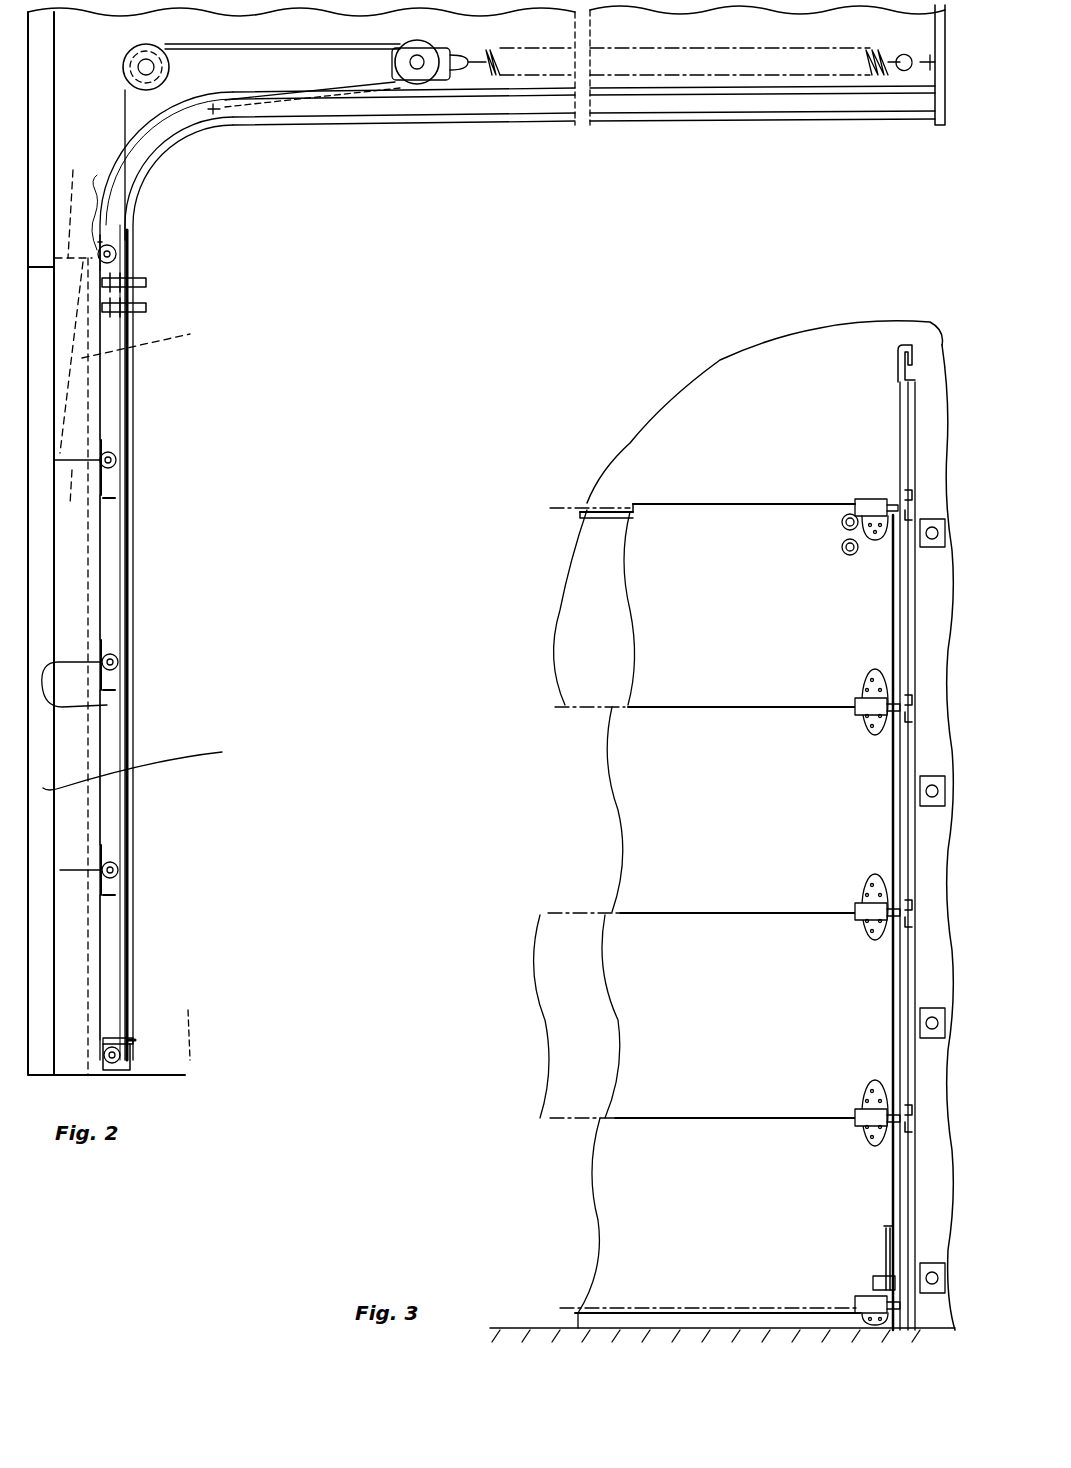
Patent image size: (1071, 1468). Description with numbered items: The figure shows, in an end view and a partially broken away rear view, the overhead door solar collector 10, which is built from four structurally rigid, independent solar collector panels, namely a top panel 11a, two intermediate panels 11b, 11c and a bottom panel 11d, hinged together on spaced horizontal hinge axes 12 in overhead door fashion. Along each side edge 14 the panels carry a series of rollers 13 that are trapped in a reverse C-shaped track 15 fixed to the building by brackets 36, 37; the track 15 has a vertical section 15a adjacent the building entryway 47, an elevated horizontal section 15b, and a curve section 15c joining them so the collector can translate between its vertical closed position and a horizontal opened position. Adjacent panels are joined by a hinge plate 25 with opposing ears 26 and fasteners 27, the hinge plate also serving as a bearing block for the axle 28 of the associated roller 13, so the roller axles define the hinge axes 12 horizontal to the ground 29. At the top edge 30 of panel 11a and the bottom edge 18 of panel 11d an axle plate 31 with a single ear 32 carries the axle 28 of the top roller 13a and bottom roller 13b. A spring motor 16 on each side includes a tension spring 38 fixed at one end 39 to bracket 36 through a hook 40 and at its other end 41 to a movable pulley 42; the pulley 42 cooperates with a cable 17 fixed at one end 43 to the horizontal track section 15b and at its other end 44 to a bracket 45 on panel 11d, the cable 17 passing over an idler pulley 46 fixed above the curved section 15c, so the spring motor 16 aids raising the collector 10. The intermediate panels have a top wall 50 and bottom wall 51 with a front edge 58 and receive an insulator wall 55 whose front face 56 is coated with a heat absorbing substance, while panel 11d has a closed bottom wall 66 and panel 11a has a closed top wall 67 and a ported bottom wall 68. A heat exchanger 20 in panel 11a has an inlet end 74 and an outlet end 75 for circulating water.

In FIG. 2, the overhead door solar collector 10 is at (86, 562).
In FIG. 3, the overhead door solar collector 10 is at (528, 1190).
In FIG. 2, the top collector panel 11a is at (105, 380).
In FIG. 3, the top collector panel 11a is at (690, 620).
In FIG. 2, the intermediate collector panel 11b is at (112, 580).
In FIG. 3, the intermediate collector panel 11b is at (700, 817).
In FIG. 2, the intermediate collector panel 11c is at (106, 762).
In FIG. 3, the intermediate collector panel 11c is at (698, 1027).
In FIG. 2, the bottom collector panel 11d is at (108, 958).
In FIG. 3, the bottom collector panel 11d is at (678, 1227).
In FIG. 3, the hinge axis 12 is at (722, 1303).
In FIG. 2, the roller 13 is at (115, 850).
In FIG. 3, the roller 13 is at (912, 1110).
In FIG. 2, the top roller 13a is at (130, 215).
In FIG. 3, the top roller 13a is at (912, 495).
In FIG. 2, the bottom roller 13b is at (122, 1058).
In FIG. 3, the bottom roller 13b is at (915, 1330).
In FIG. 2, the side edge 14 is at (95, 822).
In FIG. 3, the side edge 14 is at (888, 798).
In FIG. 2, the track 15 is at (822, 113).
In FIG. 3, the track 15 is at (892, 375).
In FIG. 2, the vertical track section 15a is at (112, 705).
In FIG. 3, the vertical track section 15a is at (890, 970).
In FIG. 2, the horizontal track section 15b is at (540, 122).
In FIG. 3, the horizontal track section 15b is at (895, 360).
In FIG. 2, the curved track section 15c is at (172, 157).
In FIG. 3, the curved track section 15c is at (910, 435).
In FIG. 2, the spring motor 16 is at (655, 42).
In FIG. 2, the cable 17 is at (263, 42).
In FIG. 3, the cable 17 is at (882, 1222).
In FIG. 2, the bottom edge 18 is at (100, 1078).
In FIG. 3, the bottom edge 18 is at (845, 1320).
In FIG. 2, the heat exchanger 20 is at (149, 339).
In FIG. 2, the hinge plate 25 is at (118, 894).
In FIG. 3, the hinge plate 25 is at (862, 1135).
In FIG. 3, the ear 26 is at (865, 935).
In FIG. 3, the fastener 27 is at (862, 920).
In FIG. 2, the axle 28 is at (120, 460).
In FIG. 3, the axle 28 is at (898, 718).
In FIG. 2, the ground 29 is at (180, 1078).
In FIG. 3, the ground 29 is at (685, 1325).
In FIG. 2, the top edge 30 is at (92, 209).
In FIG. 3, the top edge 30 is at (762, 503).
In FIG. 3, the axle plate 31 is at (878, 550).
In FIG. 3, the ear 32 is at (871, 498).
In FIG. 2, the bracket 36 is at (942, 122).
In FIG. 3, the bracket 37 is at (928, 832).
In FIG. 2, the tension spring 38 is at (702, 46).
In FIG. 2, the spring end 39 is at (895, 50).
In FIG. 2, the hook 40 is at (916, 52).
In FIG. 2, the spring end 41 is at (487, 50).
In FIG. 2, the movable pulley 42 is at (392, 45).
In FIG. 2, the cable end 43 is at (235, 118).
In FIG. 2, the cable end 44 is at (132, 1032).
In FIG. 3, the cable end 44 is at (884, 1256).
In FIG. 2, the bracket 45 is at (137, 1042).
In FIG. 3, the bracket 45 is at (874, 1285).
In FIG. 2, the idler pulley 46 is at (170, 69).
In FIG. 2, the entryway 47 is at (146, 764).
In FIG. 3, the entryway 47 is at (610, 515).
In FIG. 3, the top wall 50 is at (592, 920).
In FIG. 3, the bottom wall 51 is at (618, 1118).
In FIG. 2, the insulator wall 55 is at (130, 607).
In FIG. 2, the front face 56 is at (130, 590).
In FIG. 2, the front edge 58 is at (135, 712).
In FIG. 2, the bottom wall 66 is at (70, 1068).
In FIG. 3, the bottom wall 66 is at (612, 1325).
In FIG. 2, the top wall 67 is at (75, 202).
In FIG. 3, the top wall 67 is at (652, 510).
In FIG. 2, the bottom wall 68 is at (77, 666).
In FIG. 2, the inlet end 74 is at (150, 283).
In FIG. 3, the inlet end 74 is at (841, 526).
In FIG. 2, the outlet end 75 is at (150, 309).
In FIG. 3, the outlet end 75 is at (842, 551).